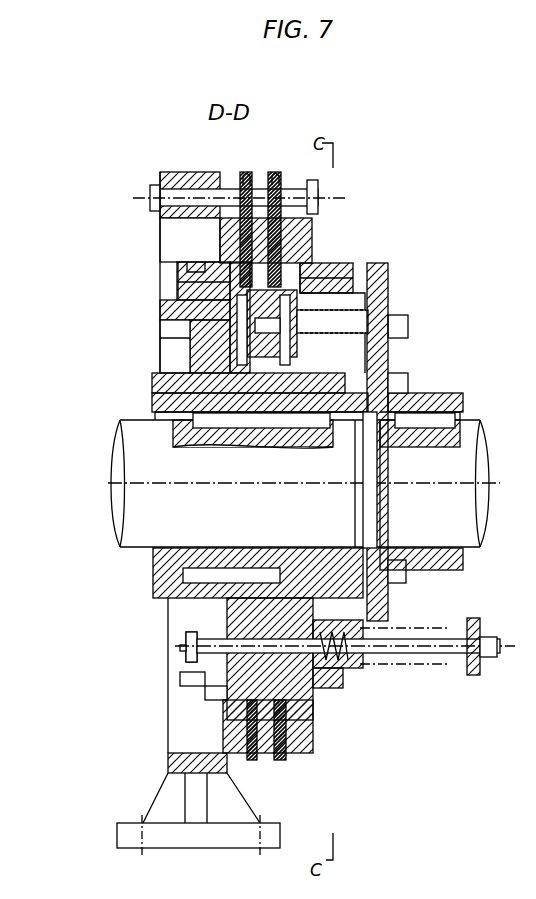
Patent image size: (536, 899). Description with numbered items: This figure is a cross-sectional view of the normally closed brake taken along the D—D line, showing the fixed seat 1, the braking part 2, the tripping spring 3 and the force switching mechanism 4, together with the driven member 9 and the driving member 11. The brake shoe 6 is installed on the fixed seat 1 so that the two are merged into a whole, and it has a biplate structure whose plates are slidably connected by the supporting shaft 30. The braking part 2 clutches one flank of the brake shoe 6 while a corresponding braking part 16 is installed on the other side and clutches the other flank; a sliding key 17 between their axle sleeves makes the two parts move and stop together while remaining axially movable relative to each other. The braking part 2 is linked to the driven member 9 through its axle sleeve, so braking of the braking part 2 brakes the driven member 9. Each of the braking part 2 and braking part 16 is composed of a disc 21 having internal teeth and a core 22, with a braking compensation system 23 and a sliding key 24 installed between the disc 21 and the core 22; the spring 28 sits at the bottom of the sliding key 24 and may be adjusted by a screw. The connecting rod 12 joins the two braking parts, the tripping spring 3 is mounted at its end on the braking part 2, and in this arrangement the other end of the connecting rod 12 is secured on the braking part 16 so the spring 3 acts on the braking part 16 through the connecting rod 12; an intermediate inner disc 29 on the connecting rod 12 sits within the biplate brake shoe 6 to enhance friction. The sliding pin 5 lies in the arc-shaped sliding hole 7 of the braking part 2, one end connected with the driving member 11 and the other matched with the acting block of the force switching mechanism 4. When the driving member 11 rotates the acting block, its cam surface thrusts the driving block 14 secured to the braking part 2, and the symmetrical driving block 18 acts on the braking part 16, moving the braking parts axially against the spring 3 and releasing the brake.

The fixed seat 1 is at (180, 173).
The braking part 2 is at (378, 234).
The tripping spring 3 is at (470, 618).
The force switching mechanism 4 is at (172, 311).
The sliding pin 5 is at (357, 329).
The brake shoe 6 is at (284, 186).
The sliding hole 7 is at (362, 354).
The driven member 9 is at (142, 505).
The driving member 11 is at (458, 461).
The connecting rod 12 is at (400, 653).
The driving block 14 is at (380, 374).
The braking part 16 is at (172, 245).
The sliding key 17 is at (200, 566).
The driving block 18 is at (205, 352).
The disc 21 is at (186, 272).
The core 22 is at (178, 340).
The braking compensation system 23 is at (178, 283).
The sliding key 24 is at (205, 696).
The spring 28 is at (195, 660).
The intermediate inner disc 29 is at (312, 229).
The supporting shaft 30 is at (298, 192).